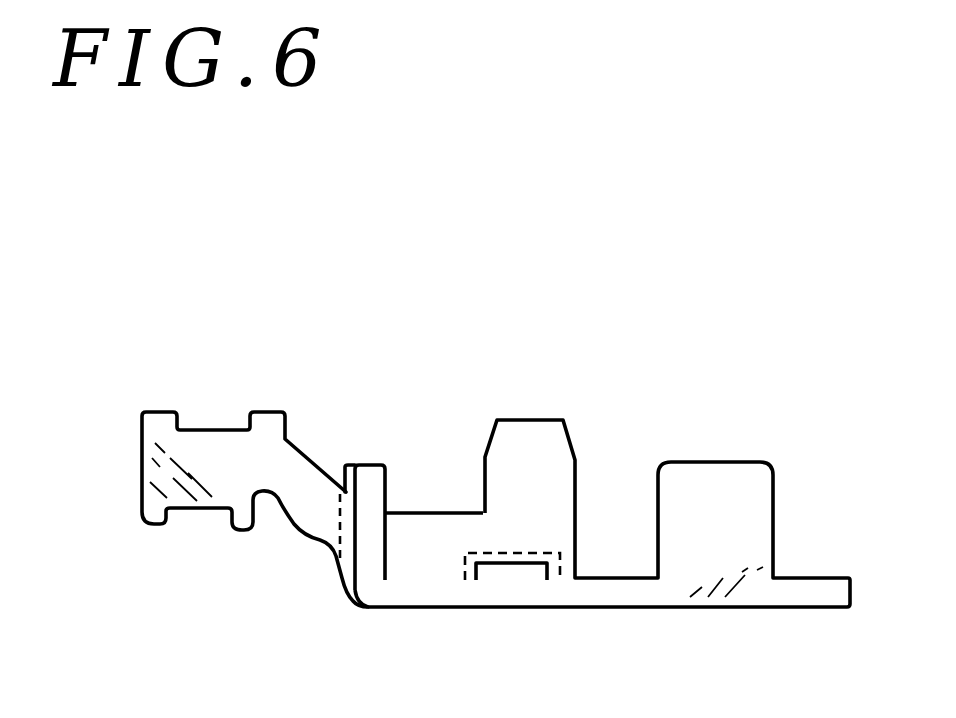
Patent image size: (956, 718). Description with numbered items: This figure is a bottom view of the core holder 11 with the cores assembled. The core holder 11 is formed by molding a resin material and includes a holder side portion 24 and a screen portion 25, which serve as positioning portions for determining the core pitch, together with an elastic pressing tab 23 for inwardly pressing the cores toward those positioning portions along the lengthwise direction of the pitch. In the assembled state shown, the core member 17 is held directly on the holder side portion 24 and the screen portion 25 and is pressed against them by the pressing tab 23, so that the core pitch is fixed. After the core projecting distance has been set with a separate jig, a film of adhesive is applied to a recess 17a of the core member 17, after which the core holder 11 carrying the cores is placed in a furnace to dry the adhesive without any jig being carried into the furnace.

The core member 17 is at (157, 416).
The holder side portion 24 is at (347, 463).
The elastic pressing tab 23 is at (370, 470).
The screen portion 25 is at (514, 553).
The recess 17a is at (541, 563).
The core holder 11 is at (622, 598).